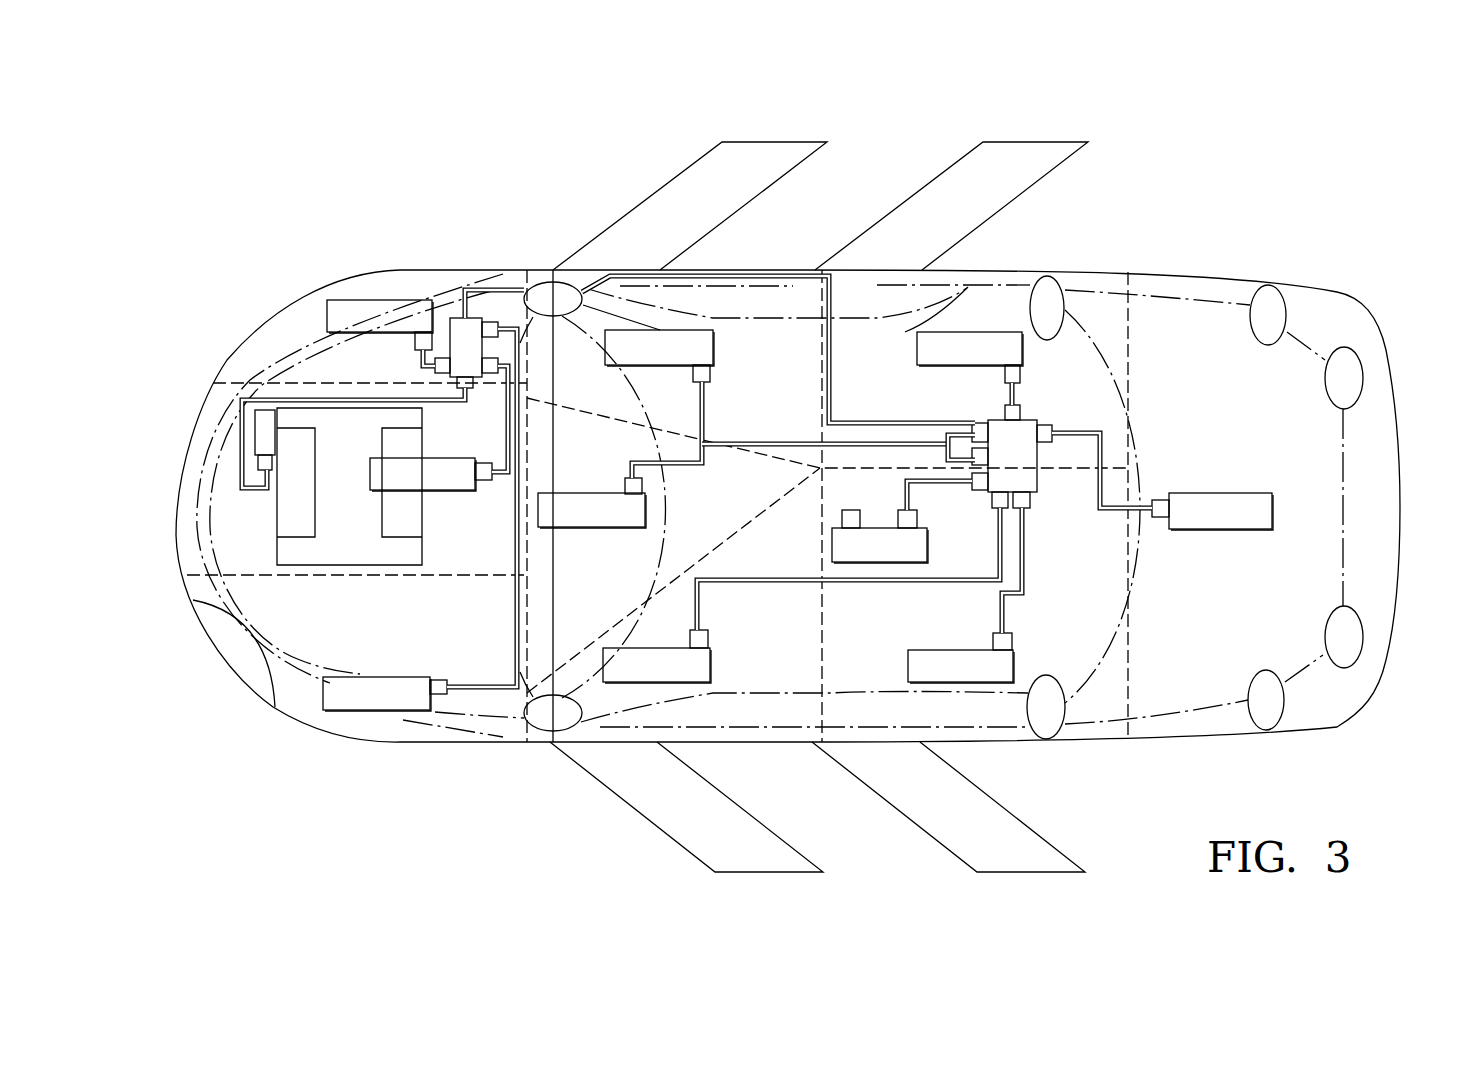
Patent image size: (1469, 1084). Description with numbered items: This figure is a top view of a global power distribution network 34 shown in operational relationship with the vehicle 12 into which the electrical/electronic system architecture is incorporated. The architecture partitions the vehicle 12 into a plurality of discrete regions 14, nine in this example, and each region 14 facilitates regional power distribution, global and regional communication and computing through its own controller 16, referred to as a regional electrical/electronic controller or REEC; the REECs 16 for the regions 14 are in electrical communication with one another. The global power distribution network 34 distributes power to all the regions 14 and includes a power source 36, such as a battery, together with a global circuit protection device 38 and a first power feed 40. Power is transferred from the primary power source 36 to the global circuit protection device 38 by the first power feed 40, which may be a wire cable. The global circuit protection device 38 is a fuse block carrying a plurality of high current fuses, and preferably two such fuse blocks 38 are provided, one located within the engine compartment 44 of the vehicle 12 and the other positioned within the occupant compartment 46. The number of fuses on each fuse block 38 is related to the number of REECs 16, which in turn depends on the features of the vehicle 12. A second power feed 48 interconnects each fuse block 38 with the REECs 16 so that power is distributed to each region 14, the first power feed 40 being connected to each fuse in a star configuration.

The vehicle 12 is at (1398, 432).
The discrete region 14 is at (392, 637).
The controller 16 is at (367, 710).
The global power distribution network 34 is at (472, 206).
The power source 36 is at (268, 425).
The global circuit protection device 38 is at (453, 312).
The first power feed 40 is at (303, 397).
The engine compartment 44 is at (236, 532).
The occupant compartment 46 is at (832, 672).
The second power feed 48 is at (508, 438).